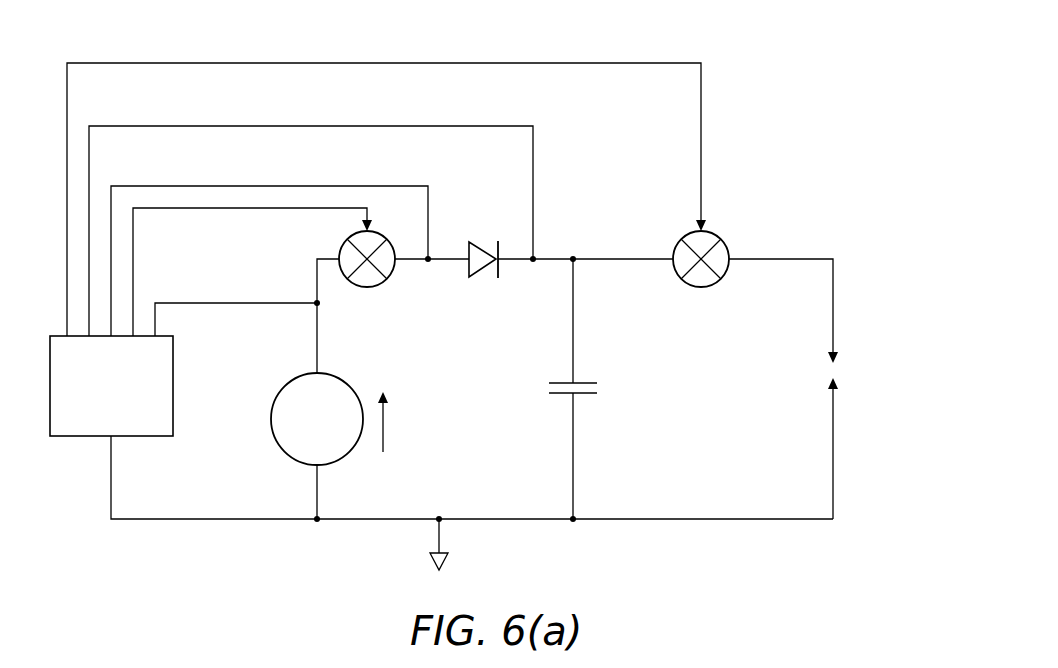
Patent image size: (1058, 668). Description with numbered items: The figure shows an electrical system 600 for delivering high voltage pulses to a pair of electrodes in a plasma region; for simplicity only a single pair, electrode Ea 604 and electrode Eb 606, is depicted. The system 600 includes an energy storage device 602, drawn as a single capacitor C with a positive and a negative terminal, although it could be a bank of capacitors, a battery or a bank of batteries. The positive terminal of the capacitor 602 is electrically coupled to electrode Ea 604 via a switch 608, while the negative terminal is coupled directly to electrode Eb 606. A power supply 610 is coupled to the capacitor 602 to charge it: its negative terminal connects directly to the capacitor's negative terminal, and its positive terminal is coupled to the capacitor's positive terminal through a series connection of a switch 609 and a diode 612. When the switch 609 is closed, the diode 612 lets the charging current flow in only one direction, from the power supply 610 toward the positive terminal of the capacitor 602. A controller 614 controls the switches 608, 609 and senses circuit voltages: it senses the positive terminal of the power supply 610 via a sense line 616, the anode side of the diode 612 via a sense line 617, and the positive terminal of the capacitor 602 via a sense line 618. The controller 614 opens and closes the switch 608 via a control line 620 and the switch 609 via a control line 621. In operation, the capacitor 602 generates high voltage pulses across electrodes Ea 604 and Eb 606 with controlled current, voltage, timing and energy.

The electrical system 600 is at (116, 55).
The energy storage device 602 is at (548, 386).
The electrode Ea 604 is at (876, 350).
The electrode Eb 606 is at (876, 395).
The switch 608 is at (701, 287).
The switch 609 is at (367, 287).
The power supply 610 is at (277, 444).
The diode 612 is at (500, 214).
The controller 614 is at (67, 437).
The sense line 616 is at (280, 303).
The sense line 617 is at (402, 186).
The sense line 618 is at (507, 126).
The control line 620 is at (672, 63).
The control line 621 is at (181, 208).